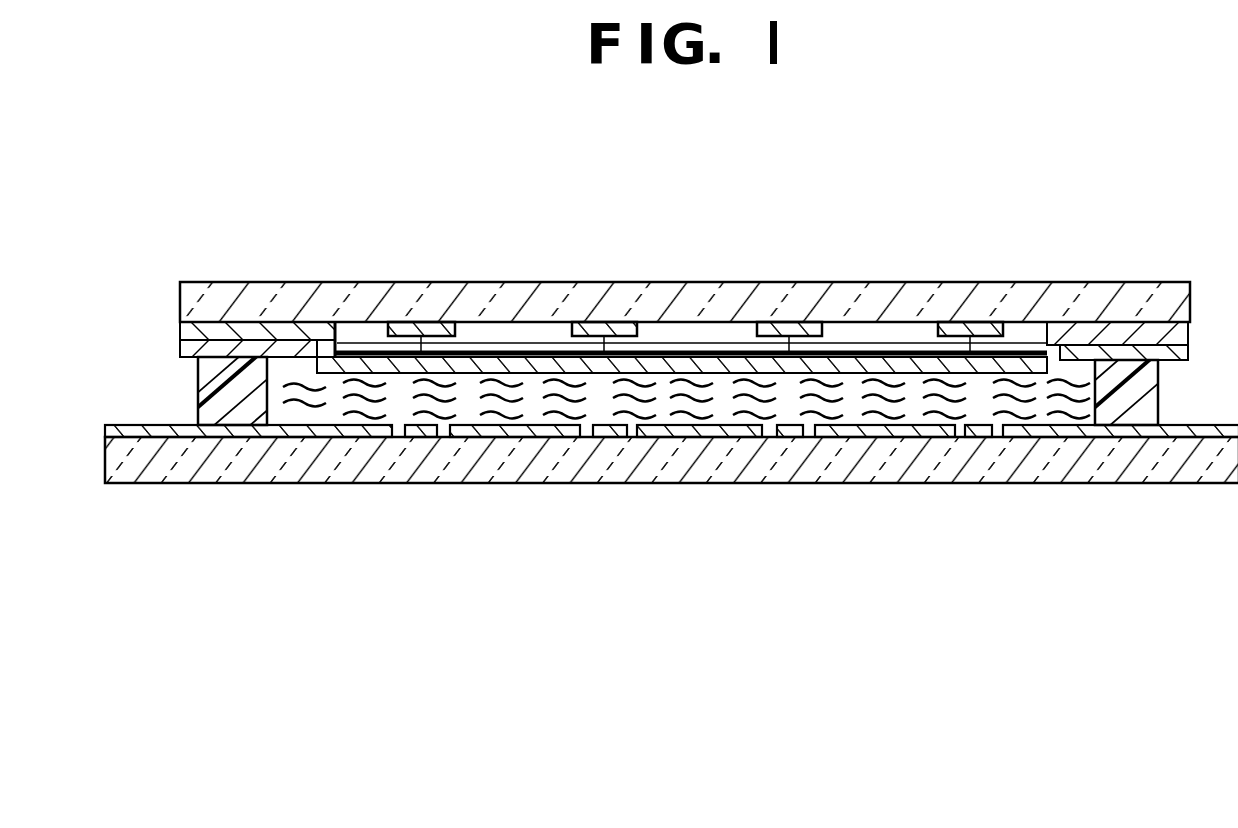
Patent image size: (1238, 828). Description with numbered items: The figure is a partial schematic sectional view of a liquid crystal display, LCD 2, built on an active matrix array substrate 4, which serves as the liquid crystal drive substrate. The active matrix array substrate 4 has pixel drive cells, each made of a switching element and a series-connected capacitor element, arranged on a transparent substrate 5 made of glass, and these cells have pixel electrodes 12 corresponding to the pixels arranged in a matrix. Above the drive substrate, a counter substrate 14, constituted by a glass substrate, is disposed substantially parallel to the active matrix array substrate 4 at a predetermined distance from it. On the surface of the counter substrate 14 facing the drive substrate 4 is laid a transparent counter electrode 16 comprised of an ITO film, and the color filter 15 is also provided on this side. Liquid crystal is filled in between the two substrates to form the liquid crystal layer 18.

The LCD 2 is at (829, 258).
The active matrix array substrate 4 is at (671, 495).
The transparent substrate 5 is at (1003, 470).
The pixel electrodes 12 is at (536, 432).
The counter substrate 14 is at (741, 300).
The color filter 15 is at (500, 335).
The counter electrode 16 is at (373, 348).
The liquid crystal layer 18 is at (1076, 386).